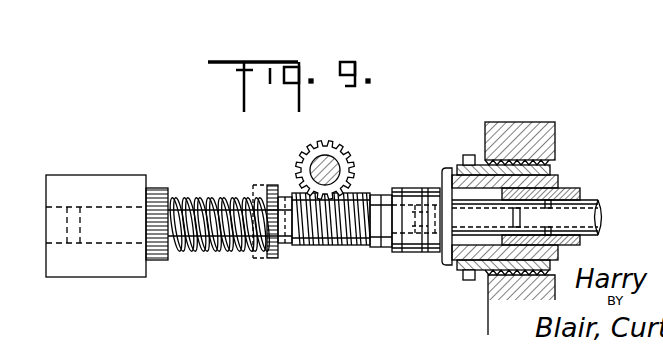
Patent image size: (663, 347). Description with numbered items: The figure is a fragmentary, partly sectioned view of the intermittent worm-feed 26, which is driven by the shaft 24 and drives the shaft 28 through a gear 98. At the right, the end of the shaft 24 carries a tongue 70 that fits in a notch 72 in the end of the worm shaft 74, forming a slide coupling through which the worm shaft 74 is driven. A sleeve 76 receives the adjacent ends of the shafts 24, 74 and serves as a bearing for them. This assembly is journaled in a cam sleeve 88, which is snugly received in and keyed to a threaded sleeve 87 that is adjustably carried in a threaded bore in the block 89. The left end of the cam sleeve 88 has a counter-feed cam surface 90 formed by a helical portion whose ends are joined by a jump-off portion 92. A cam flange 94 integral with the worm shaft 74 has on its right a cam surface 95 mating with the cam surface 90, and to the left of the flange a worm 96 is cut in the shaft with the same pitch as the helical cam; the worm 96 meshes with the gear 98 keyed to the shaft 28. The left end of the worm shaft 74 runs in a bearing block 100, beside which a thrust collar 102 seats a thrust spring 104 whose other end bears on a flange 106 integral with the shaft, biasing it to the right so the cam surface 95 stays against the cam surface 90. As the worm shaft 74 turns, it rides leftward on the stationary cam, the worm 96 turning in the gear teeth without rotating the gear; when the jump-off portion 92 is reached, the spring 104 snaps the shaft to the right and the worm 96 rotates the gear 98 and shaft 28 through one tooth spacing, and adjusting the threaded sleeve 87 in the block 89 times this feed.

The shaft 24 is at (590, 207).
The intermittent worm-feed 26 is at (286, 161).
The shaft 28 is at (325, 160).
The tongue 70 is at (551, 215).
The notch 72 is at (513, 216).
The worm shaft 74 is at (468, 212).
The sleeve 76 is at (560, 190).
The threaded sleeve 87 is at (473, 276).
The cam sleeve 88 is at (446, 254).
The block 89 is at (527, 135).
The counter-feed cam surface 90 is at (421, 200).
The jump-off portion 92 is at (432, 215).
The cam flange 94 is at (406, 240).
The cam surface 95 is at (420, 210).
The worm 96 is at (312, 247).
The gear 98 is at (352, 158).
The bearing block 100 is at (78, 184).
The thrust collar 102 is at (158, 190).
The thrust spring 104 is at (232, 252).
The flange 106 is at (272, 188).